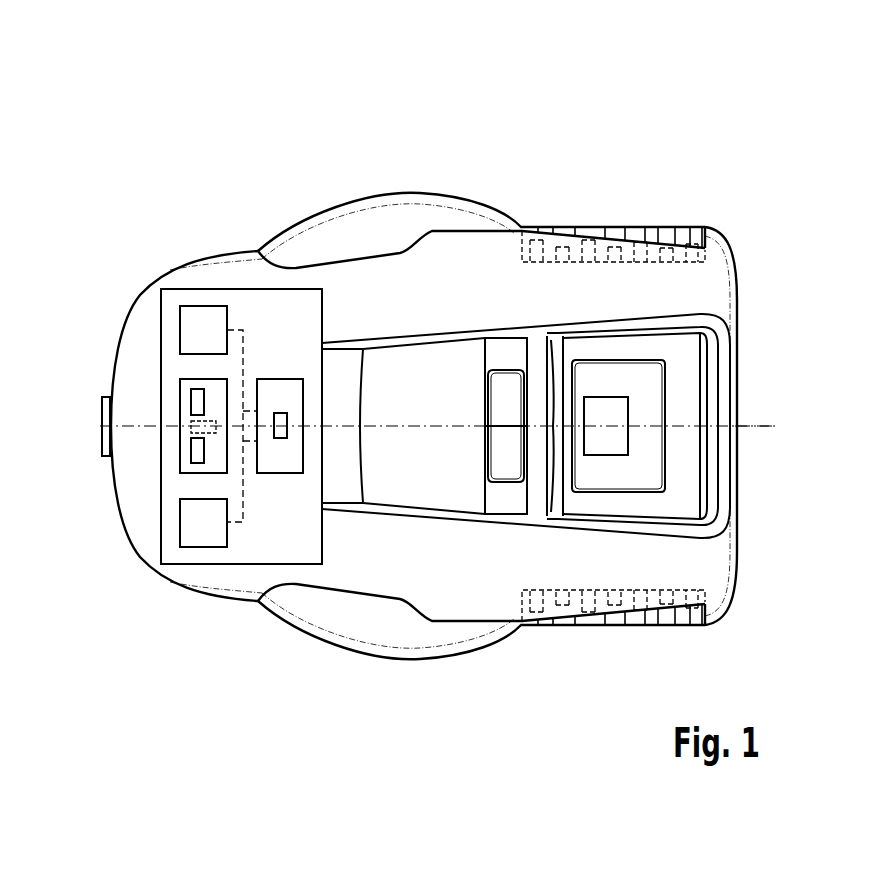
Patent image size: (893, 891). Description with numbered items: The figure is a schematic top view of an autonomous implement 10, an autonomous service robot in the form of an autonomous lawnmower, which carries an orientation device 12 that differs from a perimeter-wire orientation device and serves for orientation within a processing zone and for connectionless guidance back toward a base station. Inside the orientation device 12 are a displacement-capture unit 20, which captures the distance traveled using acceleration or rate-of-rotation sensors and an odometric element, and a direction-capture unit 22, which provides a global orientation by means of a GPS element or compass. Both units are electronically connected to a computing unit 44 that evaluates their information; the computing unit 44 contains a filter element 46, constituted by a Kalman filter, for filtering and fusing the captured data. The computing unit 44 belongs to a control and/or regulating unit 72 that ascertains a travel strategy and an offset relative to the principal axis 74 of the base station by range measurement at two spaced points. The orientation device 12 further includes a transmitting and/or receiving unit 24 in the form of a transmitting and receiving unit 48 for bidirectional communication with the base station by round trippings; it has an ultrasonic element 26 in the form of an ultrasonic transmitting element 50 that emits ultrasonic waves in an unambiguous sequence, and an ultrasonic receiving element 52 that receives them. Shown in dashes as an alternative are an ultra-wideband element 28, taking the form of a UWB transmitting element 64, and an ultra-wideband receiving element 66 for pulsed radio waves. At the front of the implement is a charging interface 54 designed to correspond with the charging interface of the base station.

The autonomous implement 10 is at (467, 120).
The orientation device 12 is at (236, 289).
The displacement-capture unit 20 is at (180, 331).
The direction-capture unit 22 is at (180, 522).
The transmitting and/or receiving unit 24 is at (133, 411).
The transmitting and receiving unit 48 is at (180, 380).
The ultrasonic element 26 is at (117, 396).
The ultrasonic transmitting element 50 is at (191, 402).
The ultra-wideband element 28 is at (126, 455).
The UWB transmitting element 64 is at (191, 430).
The ultrasonic receiving element 52 is at (191, 457).
The charging interface 54 is at (102, 417).
The ultra-wideband receiving element 66 is at (208, 421).
The computing unit 44 is at (293, 309).
The control and/or regulating unit 72 is at (282, 379).
The filter element 46 is at (280, 438).
The principal axis 74 is at (758, 426).